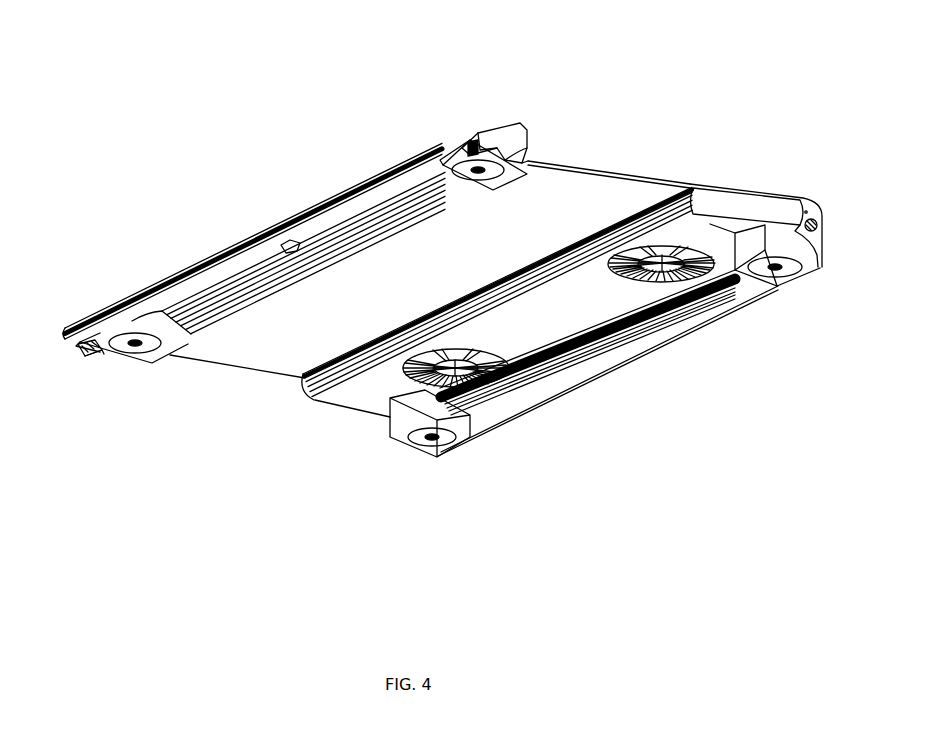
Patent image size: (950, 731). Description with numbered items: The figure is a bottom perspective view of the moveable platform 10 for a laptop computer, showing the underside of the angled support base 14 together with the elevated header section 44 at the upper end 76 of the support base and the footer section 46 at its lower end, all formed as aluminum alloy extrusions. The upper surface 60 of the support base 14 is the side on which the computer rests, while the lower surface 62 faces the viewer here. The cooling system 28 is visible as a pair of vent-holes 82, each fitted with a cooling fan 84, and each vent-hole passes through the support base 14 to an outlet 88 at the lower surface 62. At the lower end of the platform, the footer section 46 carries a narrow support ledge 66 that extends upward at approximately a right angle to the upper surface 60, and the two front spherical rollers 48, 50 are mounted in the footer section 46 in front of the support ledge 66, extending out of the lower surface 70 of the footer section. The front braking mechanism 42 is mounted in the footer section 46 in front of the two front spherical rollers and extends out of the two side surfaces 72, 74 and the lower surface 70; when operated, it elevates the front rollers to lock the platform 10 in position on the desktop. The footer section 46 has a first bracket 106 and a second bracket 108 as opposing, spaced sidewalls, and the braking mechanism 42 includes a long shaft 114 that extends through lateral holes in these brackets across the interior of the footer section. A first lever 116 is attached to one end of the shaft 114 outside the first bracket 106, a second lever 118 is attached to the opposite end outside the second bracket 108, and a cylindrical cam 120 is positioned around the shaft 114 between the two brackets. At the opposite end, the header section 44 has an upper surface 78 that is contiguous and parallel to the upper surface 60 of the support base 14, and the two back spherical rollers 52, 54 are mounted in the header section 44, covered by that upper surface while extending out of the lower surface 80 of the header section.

The moveable platform 10 is at (756, 56).
The angled support base 14 is at (640, 168).
The cooling system 28 is at (458, 380).
The front braking mechanism 42 is at (492, 123).
The elevated header section 44 is at (777, 167).
The footer section 46 is at (447, 78).
The front spherical roller 48 is at (525, 153).
The front spherical roller 50 is at (133, 355).
The back spherical roller 52 is at (807, 258).
The back spherical roller 54 is at (428, 455).
The upper surface of the support base 60 is at (568, 163).
The lower surface of the support base 62 is at (595, 164).
The support ledge 66 is at (527, 130).
The lower surface of the footer section 70 is at (447, 163).
The side surface of the footer section 72 is at (465, 135).
The side surface of the footer section 74 is at (118, 370).
The upper end of the support base 76 is at (692, 185).
The upper surface of the header section 78 is at (808, 200).
The lower surface of the header section 80 is at (805, 273).
The vent-hole 82 is at (468, 378).
The cooling fan 84 is at (463, 380).
The outlet 88 is at (486, 372).
The first bracket 106 is at (450, 147).
The second bracket 108 is at (103, 340).
The long shaft 114 is at (147, 310).
The first lever 116 is at (522, 125).
The second lever 118 is at (88, 358).
The cylindrical cam 120 is at (280, 240).